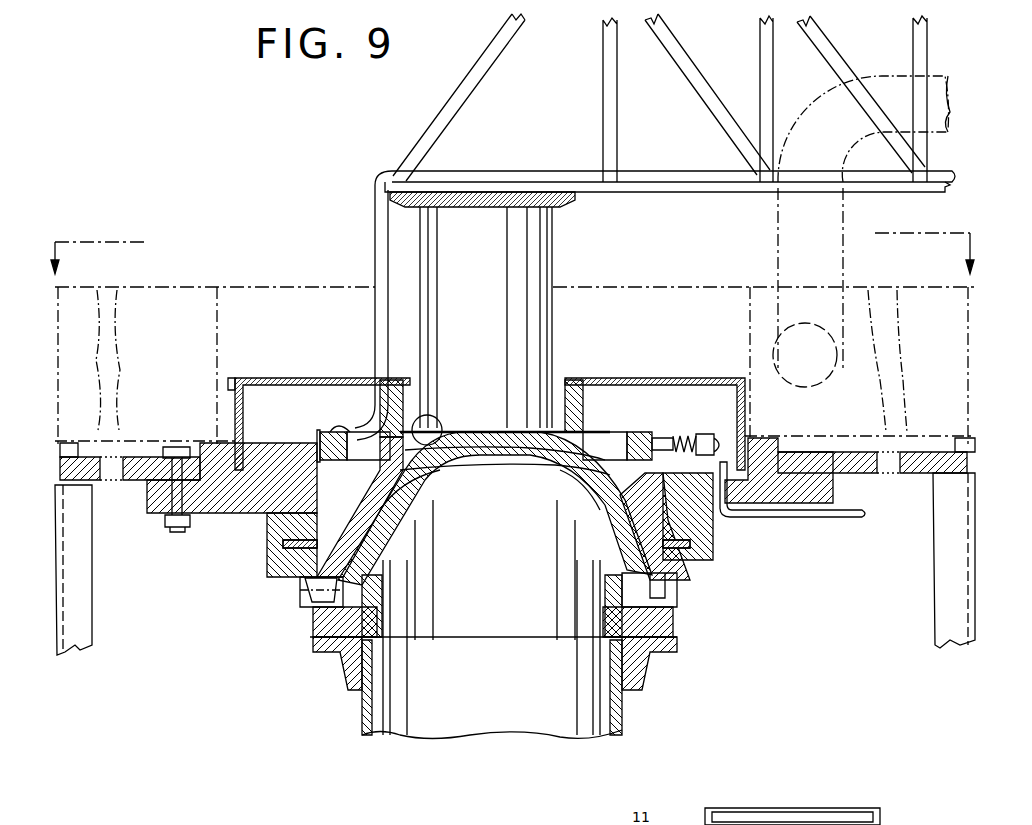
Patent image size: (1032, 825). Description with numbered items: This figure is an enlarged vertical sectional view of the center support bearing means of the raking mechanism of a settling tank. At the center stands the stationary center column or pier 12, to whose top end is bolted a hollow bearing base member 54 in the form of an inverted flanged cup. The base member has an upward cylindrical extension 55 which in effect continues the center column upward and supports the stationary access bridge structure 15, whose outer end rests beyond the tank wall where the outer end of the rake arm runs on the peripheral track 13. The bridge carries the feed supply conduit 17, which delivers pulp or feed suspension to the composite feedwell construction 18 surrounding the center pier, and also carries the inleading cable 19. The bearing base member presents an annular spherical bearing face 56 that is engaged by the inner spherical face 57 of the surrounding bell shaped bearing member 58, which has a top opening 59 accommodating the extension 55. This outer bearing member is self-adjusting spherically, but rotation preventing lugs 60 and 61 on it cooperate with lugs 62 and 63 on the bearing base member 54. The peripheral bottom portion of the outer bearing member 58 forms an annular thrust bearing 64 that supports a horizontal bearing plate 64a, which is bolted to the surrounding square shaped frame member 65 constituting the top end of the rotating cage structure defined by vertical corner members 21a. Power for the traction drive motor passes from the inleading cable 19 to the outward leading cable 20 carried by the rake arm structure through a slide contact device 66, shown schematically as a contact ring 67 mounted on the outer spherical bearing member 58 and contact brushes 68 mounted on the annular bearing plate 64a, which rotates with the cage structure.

The center column or pier 12 is at (362, 712).
The peripheral track 13 is at (511, 241).
The access bridge structure 15 is at (700, 193).
The feed supply conduit 17 is at (898, 70).
The composite feedwell construction 18 is at (682, 284).
The inleading cable 19 is at (672, 180).
The outward leading cable 20 is at (798, 516).
The vertical corner members 21a is at (82, 622).
The bearing base member 54 is at (372, 598).
The upward cylindrical extension 55 is at (492, 286).
The annular spherical bearing face 56 is at (437, 440).
The inner spherical face 57 is at (360, 528).
The bell shaped bearing member 58 is at (292, 578).
The top opening 59 is at (412, 392).
The rotation preventing lug 60 is at (320, 592).
The rotation preventing lug 61 is at (668, 582).
The lug 62 is at (350, 603).
The lug 63 is at (632, 600).
The annular thrust bearing 64 is at (283, 545).
The horizontal bearing plate 64a is at (860, 535).
The square shaped frame member 65 is at (137, 473).
The slide contact device 66 is at (312, 450).
The contact ring 67 is at (322, 445).
The contact brushes 68 is at (660, 446).